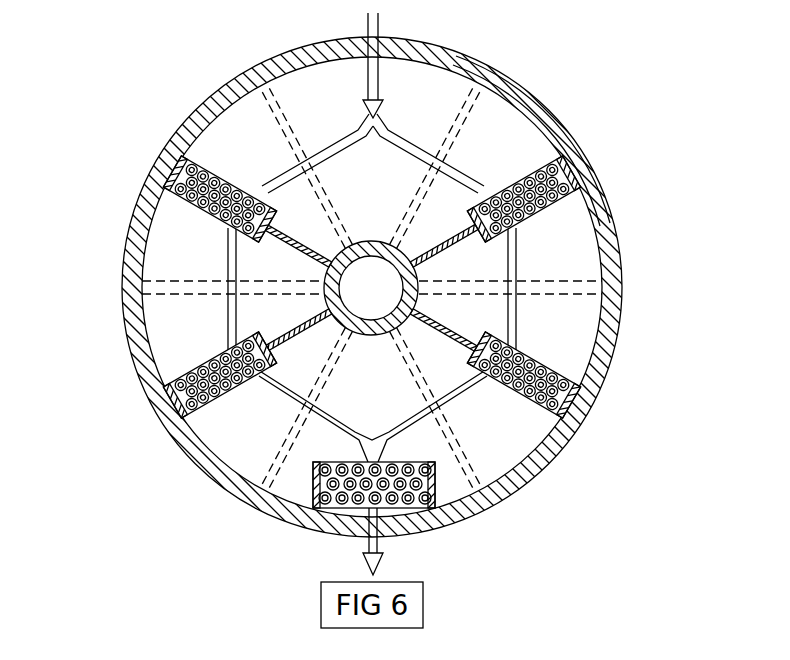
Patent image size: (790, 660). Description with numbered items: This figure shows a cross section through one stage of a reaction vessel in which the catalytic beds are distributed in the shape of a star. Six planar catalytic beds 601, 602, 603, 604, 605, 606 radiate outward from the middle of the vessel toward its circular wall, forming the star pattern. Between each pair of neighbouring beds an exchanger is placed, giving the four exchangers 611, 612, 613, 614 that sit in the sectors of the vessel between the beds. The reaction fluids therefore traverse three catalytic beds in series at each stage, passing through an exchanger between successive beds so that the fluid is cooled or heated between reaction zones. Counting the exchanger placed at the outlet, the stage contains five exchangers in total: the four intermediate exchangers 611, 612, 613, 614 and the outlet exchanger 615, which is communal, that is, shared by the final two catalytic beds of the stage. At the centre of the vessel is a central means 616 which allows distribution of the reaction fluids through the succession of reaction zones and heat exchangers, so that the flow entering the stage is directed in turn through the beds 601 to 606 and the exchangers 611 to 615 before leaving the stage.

The planar catalytic bed 601 is at (458, 125).
The planar catalytic bed 602 is at (552, 283).
The planar catalytic bed 603 is at (470, 450).
The planar catalytic bed 604 is at (278, 452).
The planar catalytic bed 605 is at (195, 290).
The planar catalytic bed 606 is at (272, 106).
The exchanger 611 is at (522, 208).
The exchanger 612 is at (527, 378).
The exchanger 613 is at (205, 166).
The exchanger 614 is at (228, 385).
The exchanger 615 is at (405, 495).
The central means 616 is at (326, 270).